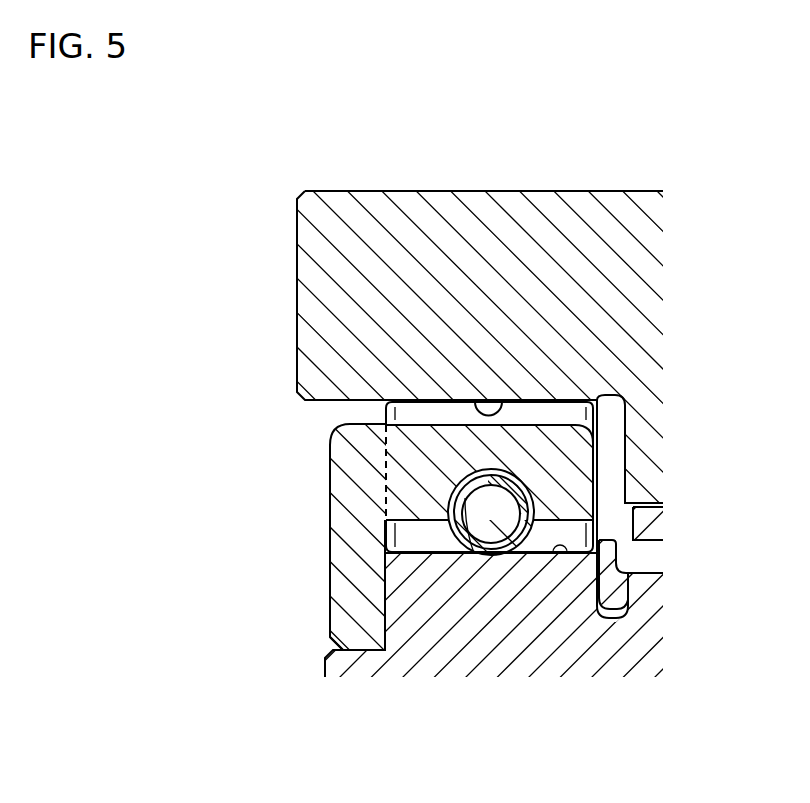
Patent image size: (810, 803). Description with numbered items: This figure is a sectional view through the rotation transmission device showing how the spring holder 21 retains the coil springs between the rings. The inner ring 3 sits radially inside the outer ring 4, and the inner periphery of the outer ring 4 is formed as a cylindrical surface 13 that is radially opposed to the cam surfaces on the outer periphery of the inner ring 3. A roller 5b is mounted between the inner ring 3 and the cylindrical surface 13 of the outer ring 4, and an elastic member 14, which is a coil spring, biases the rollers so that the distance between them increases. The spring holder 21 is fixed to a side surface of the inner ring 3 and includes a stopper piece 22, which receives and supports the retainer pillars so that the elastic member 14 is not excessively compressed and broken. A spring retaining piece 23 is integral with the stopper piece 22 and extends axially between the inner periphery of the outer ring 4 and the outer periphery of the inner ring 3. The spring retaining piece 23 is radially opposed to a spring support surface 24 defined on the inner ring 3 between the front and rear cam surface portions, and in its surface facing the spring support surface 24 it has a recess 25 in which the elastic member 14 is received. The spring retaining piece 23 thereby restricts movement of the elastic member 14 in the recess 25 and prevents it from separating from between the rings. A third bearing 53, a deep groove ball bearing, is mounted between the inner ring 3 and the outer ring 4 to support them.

The inner ring 3 is at (340, 667).
The outer ring 4 is at (325, 290).
The roller 5b is at (384, 412).
The cylindrical surface 13 is at (507, 400).
The elastic member 14 is at (520, 542).
The spring holder 21 is at (333, 566).
The stopper piece 22 is at (345, 482).
The spring retaining piece 23 is at (572, 462).
The spring support surface 24 is at (561, 553).
The recess 25 is at (483, 540).
The third bearing 53 is at (645, 528).